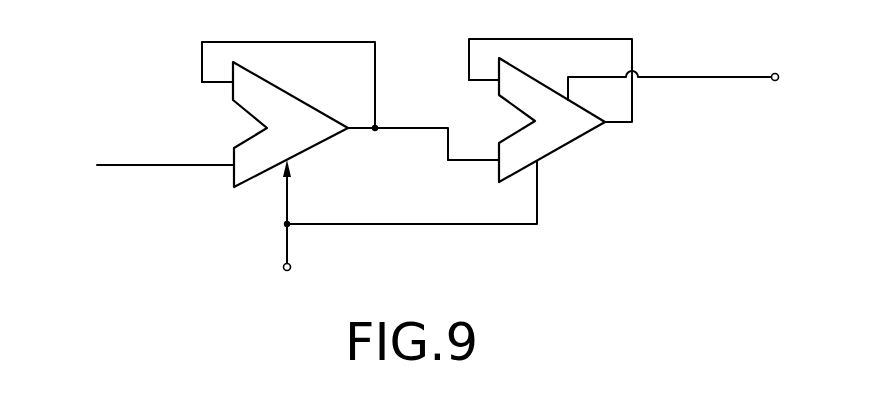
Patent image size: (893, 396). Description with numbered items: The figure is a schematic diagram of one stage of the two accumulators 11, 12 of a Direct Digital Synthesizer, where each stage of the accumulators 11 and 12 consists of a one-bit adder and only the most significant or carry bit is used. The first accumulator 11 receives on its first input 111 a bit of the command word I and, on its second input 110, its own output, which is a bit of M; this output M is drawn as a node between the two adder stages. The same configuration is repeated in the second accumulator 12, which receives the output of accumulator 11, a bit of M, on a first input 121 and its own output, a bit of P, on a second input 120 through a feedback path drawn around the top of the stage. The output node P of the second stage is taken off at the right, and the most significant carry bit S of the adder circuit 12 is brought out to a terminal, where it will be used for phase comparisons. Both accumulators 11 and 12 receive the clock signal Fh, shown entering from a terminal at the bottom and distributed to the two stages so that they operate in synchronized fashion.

The first accumulator 11 is at (281, 89).
The second input of first accumulator 110 is at (231, 87).
The first input of first accumulator 111 is at (233, 169).
The second accumulator 12 is at (531, 77).
The second input of second accumulator 120 is at (499, 84).
The first input of second accumulator 121 is at (498, 166).
The command word I is at (73, 149).
The output of first accumulator M is at (375, 133).
The output of second accumulator P is at (632, 128).
The most significant carry bit S is at (673, 66).
The clock signal Fh is at (410, 222).